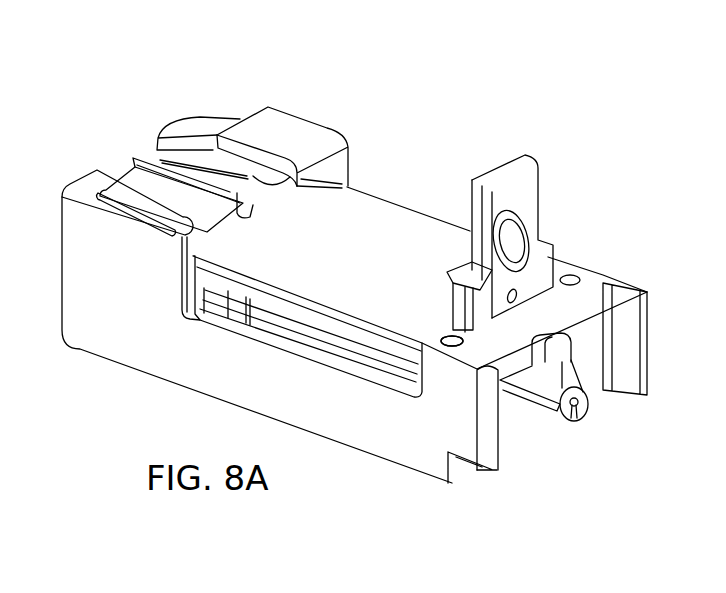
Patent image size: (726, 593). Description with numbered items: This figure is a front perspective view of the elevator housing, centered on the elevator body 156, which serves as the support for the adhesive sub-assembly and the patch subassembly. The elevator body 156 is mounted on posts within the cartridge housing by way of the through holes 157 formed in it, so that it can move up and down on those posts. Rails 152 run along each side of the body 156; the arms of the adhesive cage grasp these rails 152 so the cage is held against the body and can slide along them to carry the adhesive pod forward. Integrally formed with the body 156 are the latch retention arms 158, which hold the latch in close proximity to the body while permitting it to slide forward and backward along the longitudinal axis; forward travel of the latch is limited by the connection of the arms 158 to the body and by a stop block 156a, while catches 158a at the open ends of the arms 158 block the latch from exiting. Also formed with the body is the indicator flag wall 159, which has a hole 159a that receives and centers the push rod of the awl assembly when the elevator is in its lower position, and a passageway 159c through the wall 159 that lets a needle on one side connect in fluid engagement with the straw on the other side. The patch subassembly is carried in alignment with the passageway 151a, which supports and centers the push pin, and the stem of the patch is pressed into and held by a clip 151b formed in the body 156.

The passageway 151a is at (570, 358).
The clip 151b is at (570, 421).
The rails 152 is at (303, 310).
The elevator body 156 is at (178, 351).
The stop block 156a is at (288, 186).
The through holes 157 is at (445, 337).
The retention arms 158 is at (289, 121).
The catches 158a is at (110, 198).
The indicator flag wall 159 is at (543, 190).
The hole 159a is at (531, 233).
The passageway 159c is at (520, 284).